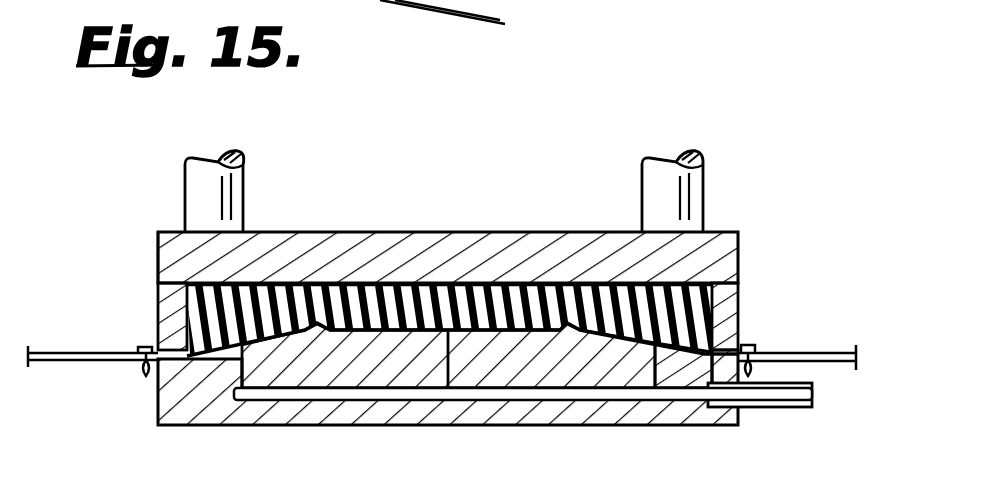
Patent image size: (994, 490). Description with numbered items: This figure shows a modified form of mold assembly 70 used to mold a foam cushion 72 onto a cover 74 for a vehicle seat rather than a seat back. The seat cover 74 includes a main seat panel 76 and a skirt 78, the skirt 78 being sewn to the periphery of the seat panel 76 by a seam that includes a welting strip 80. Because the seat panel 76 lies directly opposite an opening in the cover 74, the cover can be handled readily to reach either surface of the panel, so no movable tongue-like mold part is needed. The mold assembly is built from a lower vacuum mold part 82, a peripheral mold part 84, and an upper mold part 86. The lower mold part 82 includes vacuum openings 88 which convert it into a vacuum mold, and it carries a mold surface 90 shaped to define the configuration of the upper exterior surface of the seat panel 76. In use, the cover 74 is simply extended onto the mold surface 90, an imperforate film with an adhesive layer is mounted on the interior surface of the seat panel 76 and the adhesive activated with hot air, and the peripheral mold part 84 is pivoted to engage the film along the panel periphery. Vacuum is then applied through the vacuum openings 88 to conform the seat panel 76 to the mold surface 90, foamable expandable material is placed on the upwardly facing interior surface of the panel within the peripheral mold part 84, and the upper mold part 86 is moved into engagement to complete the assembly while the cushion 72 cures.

The mold assembly 70 is at (152, 286).
The foam cushion 72 is at (519, 286).
The cover 74 is at (549, 335).
The main seat panel 76 is at (338, 332).
The skirt 78 is at (104, 362).
The welting strip 80 is at (143, 375).
The lower vacuum mold part 82 is at (190, 405).
The peripheral mold part 84 is at (166, 312).
The upper mold part 86 is at (332, 258).
The vacuum openings 88 is at (276, 396).
The mold surface 90 is at (697, 352).